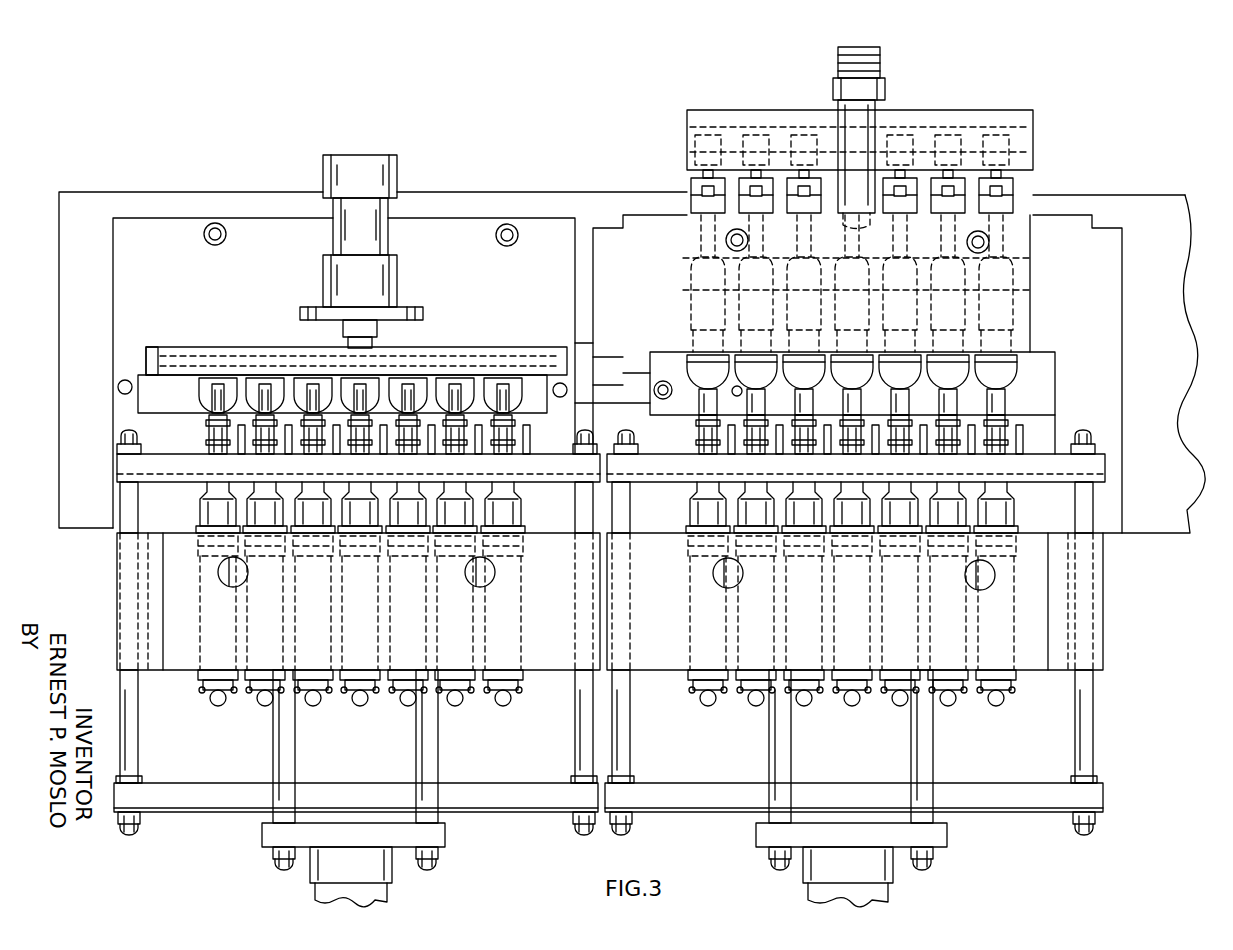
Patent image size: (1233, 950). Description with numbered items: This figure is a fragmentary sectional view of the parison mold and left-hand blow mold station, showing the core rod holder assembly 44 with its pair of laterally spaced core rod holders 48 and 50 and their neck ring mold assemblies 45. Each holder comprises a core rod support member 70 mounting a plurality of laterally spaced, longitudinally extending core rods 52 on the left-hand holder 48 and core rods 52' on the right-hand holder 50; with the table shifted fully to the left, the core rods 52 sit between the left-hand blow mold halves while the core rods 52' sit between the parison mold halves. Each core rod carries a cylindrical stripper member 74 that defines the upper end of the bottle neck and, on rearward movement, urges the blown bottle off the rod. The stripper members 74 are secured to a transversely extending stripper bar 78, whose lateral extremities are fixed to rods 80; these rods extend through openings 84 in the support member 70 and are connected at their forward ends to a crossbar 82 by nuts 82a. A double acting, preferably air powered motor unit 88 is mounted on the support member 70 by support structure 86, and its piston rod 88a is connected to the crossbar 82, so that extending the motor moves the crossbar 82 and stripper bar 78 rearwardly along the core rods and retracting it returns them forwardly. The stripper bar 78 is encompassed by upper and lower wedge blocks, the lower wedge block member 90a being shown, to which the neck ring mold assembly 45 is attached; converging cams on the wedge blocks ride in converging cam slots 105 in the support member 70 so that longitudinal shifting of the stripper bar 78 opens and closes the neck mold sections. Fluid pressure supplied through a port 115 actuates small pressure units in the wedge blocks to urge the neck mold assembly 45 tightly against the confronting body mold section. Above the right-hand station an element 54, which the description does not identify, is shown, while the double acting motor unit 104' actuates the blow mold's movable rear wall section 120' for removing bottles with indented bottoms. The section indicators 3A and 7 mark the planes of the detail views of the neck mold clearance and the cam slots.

The double acting motor unit 104' is at (389, 245).
The manifold block with fitting 54 is at (905, 88).
The cross bar 120' is at (356, 342).
The neck ring mold assembly 45 is at (183, 432).
The core rods 52 is at (374, 363).
The core rods 52' is at (867, 365).
The stripper member 74 is at (262, 445).
The stripper bar 78 is at (538, 466).
The port 115 is at (118, 470).
The nuts 82a is at (115, 440).
The rods 80 is at (132, 742).
The openings 84 is at (125, 598).
The core rod holder 48 is at (118, 668).
The core rod holder assembly 44 is at (548, 680).
The core rod holder 50 is at (1038, 672).
The lower wedge block member 90a is at (158, 517).
The converging cam slots 105 is at (150, 597).
The core rod support member 70 is at (180, 668).
The support structure 86 is at (437, 755).
The crossbar 82 is at (505, 810).
The piston rod 88a is at (356, 820).
The motor unit 88 is at (392, 892).
The section line 7 is at (662, 522).
The section line 3A is at (858, 316).